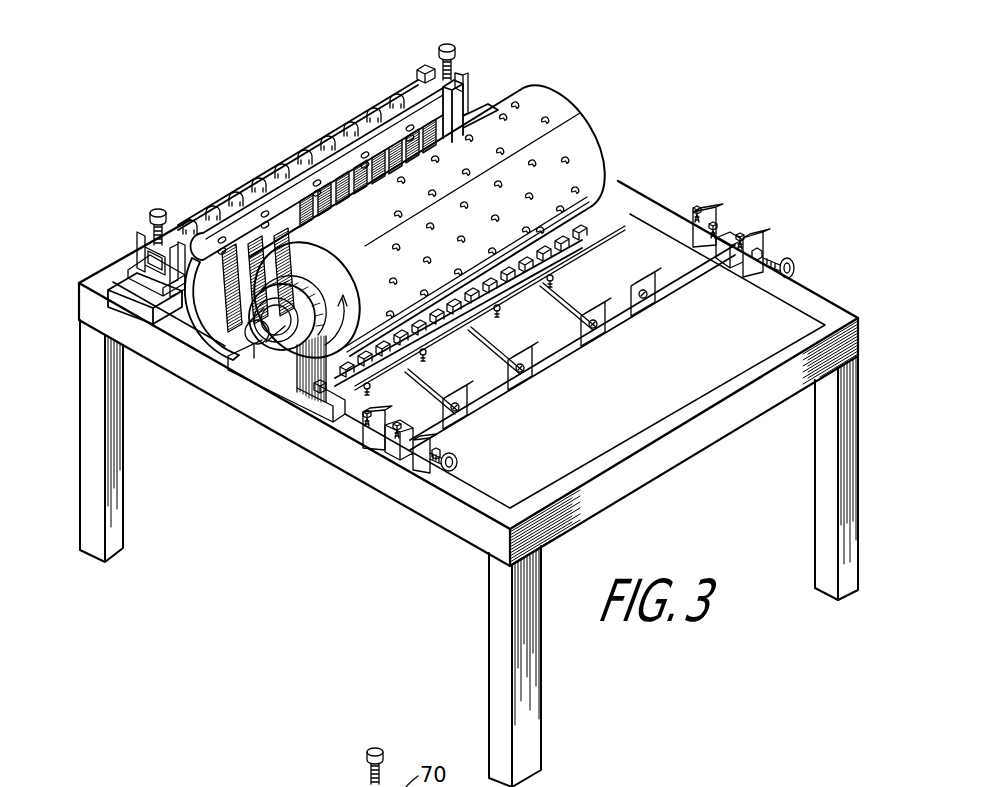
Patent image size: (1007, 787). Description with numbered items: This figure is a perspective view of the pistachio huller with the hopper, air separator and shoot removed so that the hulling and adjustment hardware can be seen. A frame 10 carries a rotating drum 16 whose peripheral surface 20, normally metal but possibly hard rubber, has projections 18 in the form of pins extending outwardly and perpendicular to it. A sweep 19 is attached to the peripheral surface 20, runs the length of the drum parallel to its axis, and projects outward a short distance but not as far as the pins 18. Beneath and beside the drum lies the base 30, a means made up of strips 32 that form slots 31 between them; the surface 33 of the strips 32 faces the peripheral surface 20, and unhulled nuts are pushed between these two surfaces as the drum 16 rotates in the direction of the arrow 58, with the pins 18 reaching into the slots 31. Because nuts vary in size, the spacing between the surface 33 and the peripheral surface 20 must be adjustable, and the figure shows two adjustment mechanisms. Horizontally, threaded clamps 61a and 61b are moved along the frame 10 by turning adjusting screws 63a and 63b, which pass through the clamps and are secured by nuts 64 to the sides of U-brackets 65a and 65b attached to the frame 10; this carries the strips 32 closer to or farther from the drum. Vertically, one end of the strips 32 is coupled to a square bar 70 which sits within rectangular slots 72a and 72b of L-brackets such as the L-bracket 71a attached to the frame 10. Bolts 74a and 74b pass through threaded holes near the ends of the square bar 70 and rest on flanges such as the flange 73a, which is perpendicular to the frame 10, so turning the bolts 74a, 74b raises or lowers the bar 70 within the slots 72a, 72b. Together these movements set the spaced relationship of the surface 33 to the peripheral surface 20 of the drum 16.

The frame 10 is at (858, 318).
The drum 16 is at (600, 135).
The projections 18 is at (600, 160).
The sweep 19 is at (583, 112).
The peripheral surface 20 is at (548, 98).
The base 30 is at (468, 312).
The slots 31 is at (226, 247).
The strips 32 is at (225, 318).
The surface 33 is at (254, 247).
The arrow 58 is at (332, 285).
The threaded clamp 61a is at (410, 455).
The threaded clamp 61b is at (742, 237).
The adjusting screw 63a is at (462, 462).
The adjusting screw 63b is at (795, 270).
The nuts 64 is at (697, 210).
The U-bracket 65a is at (365, 432).
The U-bracket 65b is at (715, 218).
The square bar 70 is at (463, 88).
The L-bracket 71a is at (120, 298).
The rectangular slot 72a is at (148, 232).
The rectangular slot 72b is at (428, 70).
The flange 73a is at (135, 270).
The bolt 74a is at (162, 207).
The bolt 74b is at (455, 48).